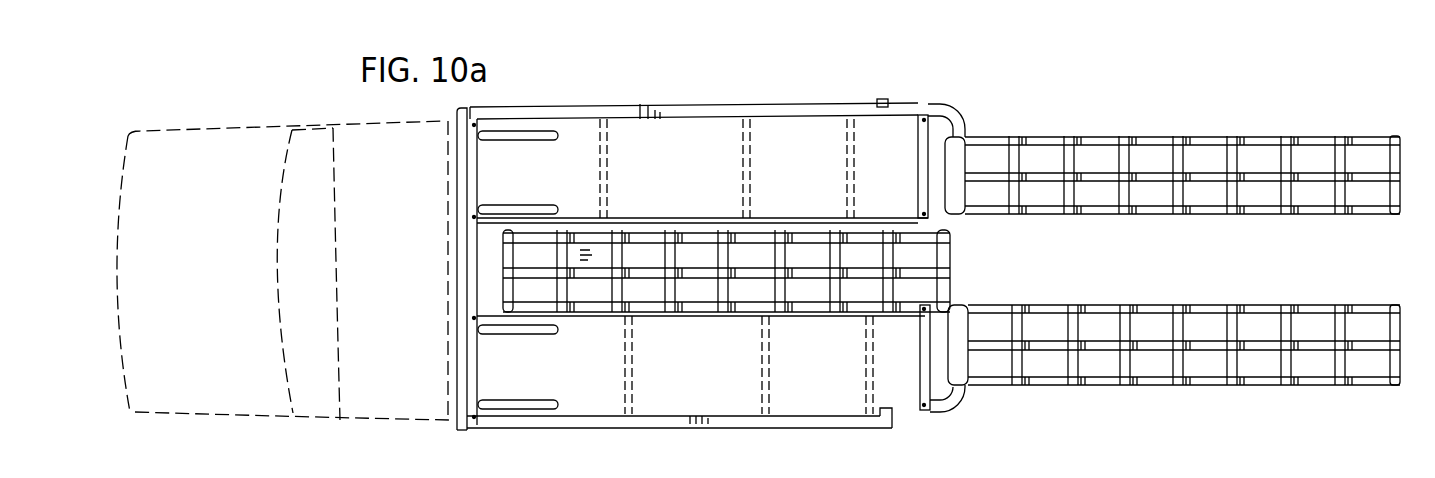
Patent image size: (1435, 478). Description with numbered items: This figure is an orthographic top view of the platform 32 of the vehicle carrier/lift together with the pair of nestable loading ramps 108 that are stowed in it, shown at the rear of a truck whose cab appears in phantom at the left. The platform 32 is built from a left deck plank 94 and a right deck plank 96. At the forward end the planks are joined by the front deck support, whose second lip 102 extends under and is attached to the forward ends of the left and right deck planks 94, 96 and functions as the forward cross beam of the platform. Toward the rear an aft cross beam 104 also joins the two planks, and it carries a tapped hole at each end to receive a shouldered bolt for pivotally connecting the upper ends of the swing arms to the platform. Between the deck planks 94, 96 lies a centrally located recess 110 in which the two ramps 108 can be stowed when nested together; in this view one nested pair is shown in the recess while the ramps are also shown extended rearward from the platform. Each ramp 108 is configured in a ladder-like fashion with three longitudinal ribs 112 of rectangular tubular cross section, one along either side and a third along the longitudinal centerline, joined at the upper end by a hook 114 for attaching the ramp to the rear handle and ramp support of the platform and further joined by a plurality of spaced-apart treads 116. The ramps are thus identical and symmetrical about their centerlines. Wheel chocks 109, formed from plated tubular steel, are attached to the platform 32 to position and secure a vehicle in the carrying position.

The platform 32 is at (637, 140).
The left deck plank 94 is at (718, 420).
The right deck plank 96 is at (707, 142).
The second lip 102 is at (477, 377).
The aft cross beam 104 is at (857, 305).
The nestable loading ramps 108 is at (1058, 128).
The wheel chocks 109 is at (548, 395).
The centrally located recess 110 is at (487, 250).
The longitudinal ribs 112 is at (1050, 383).
The hook 114 is at (962, 390).
The treads 116 is at (1122, 305).